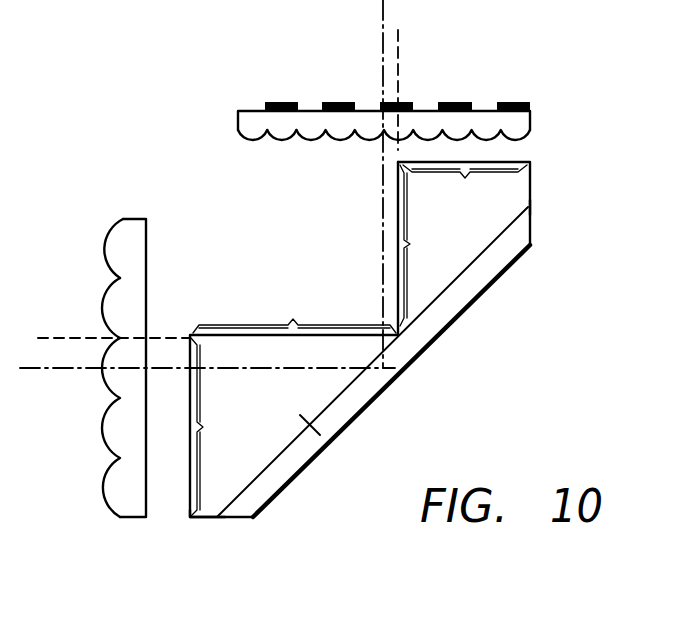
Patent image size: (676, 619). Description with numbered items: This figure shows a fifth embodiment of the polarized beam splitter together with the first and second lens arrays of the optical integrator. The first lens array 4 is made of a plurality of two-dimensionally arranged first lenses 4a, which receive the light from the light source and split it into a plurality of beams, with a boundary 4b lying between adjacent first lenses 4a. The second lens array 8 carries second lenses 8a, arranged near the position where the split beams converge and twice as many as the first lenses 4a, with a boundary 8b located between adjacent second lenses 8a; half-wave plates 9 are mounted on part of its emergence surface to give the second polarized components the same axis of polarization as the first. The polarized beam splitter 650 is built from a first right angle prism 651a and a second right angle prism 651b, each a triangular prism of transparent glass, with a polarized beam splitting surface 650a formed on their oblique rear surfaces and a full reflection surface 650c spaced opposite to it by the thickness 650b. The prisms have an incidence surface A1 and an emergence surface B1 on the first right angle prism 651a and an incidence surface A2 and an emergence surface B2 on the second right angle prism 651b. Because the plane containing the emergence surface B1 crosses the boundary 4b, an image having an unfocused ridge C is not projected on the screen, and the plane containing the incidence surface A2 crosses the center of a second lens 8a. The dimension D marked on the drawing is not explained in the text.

The first lens array 4 is at (94, 339).
The first lens 4a is at (103, 242).
The boundary 4b is at (120, 338).
The second lens array 8 is at (400, 120).
The second lens 8a is at (253, 141).
The boundary 8b is at (296, 141).
The half-wave plate 9 is at (455, 100).
The polarized beam splitter 650 is at (401, 368).
The polarized beam splitting surface 650a is at (516, 217).
The thickness 650b is at (288, 403).
The full reflection surface 650c is at (514, 266).
The first right angle prism 651a is at (210, 518).
The second right angle prism 651b is at (441, 287).
The incidence surface A1 is at (214, 427).
The incidence surface A2 is at (421, 245).
The emergence surface B1 is at (294, 311).
The emergence surface B2 is at (465, 189).
The unfocused ridge C is at (191, 334).
The dimension D is at (400, 163).